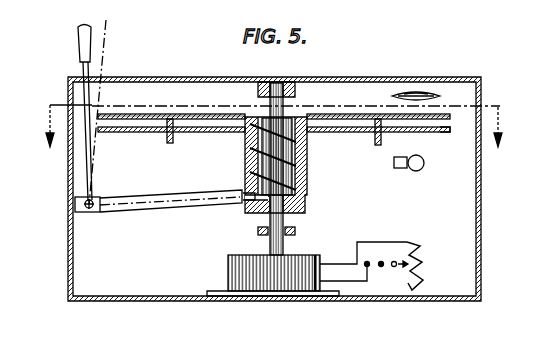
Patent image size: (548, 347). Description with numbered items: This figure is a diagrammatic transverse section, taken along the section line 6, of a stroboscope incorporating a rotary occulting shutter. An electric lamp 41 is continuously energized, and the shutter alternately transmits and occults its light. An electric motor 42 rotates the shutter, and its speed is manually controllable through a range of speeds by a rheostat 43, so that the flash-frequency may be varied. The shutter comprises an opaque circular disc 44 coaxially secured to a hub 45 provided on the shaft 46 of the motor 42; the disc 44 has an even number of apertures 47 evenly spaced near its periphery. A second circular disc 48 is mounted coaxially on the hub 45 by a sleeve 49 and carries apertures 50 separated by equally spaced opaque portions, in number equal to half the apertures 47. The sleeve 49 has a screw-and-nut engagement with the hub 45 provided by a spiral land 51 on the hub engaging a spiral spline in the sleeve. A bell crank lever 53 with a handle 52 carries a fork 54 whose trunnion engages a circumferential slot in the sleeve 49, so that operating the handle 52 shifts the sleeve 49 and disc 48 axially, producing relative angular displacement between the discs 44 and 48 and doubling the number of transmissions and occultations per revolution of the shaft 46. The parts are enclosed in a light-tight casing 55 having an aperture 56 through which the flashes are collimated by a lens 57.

The section line 6 is at (276, 117).
The electric lamp 41 is at (423, 169).
The electric motor 42 is at (307, 266).
The rheostat 43 is at (420, 282).
The circular disc 44 is at (352, 117).
The hub 45 is at (291, 117).
The shaft 46 is at (284, 221).
The apertures 47 is at (132, 113).
The second circular disc 48 is at (447, 133).
The sleeve 49 is at (306, 150).
The apertures 50 is at (136, 132).
The spiral land 51 is at (247, 153).
The handle 52 is at (77, 34).
The bell crank lever 53 is at (166, 212).
The fork 54 is at (170, 143).
The casing 55 is at (181, 78).
The aperture 56 is at (406, 79).
The lens 57 is at (437, 95).